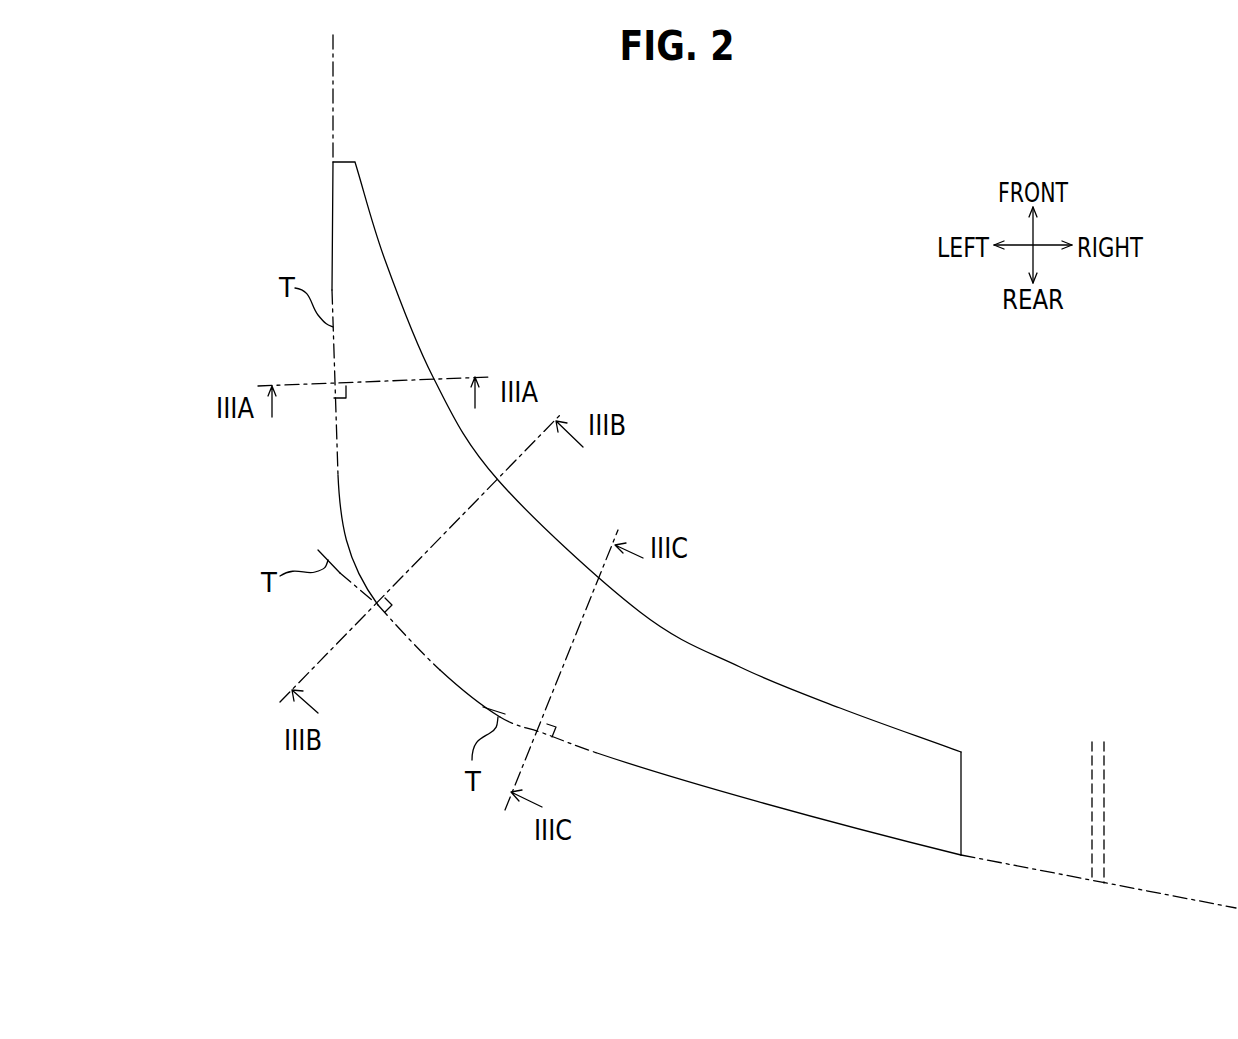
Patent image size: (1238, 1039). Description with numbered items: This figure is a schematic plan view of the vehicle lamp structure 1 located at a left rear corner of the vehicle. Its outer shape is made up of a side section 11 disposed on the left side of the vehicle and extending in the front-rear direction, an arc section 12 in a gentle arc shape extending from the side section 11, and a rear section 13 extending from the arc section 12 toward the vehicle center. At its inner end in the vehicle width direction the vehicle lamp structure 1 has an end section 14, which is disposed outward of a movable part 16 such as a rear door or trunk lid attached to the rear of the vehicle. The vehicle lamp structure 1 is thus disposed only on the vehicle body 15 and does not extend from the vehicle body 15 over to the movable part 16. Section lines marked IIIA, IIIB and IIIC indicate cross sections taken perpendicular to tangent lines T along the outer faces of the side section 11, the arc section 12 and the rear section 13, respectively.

The vehicle lamp structure 1 is at (198, 705).
The side section 11 is at (288, 348).
The arc section 12 is at (372, 680).
The rear section 13 is at (590, 797).
The end section 14 is at (962, 798).
The vehicle body 15 is at (333, 77).
The movable part 16 is at (1162, 895).